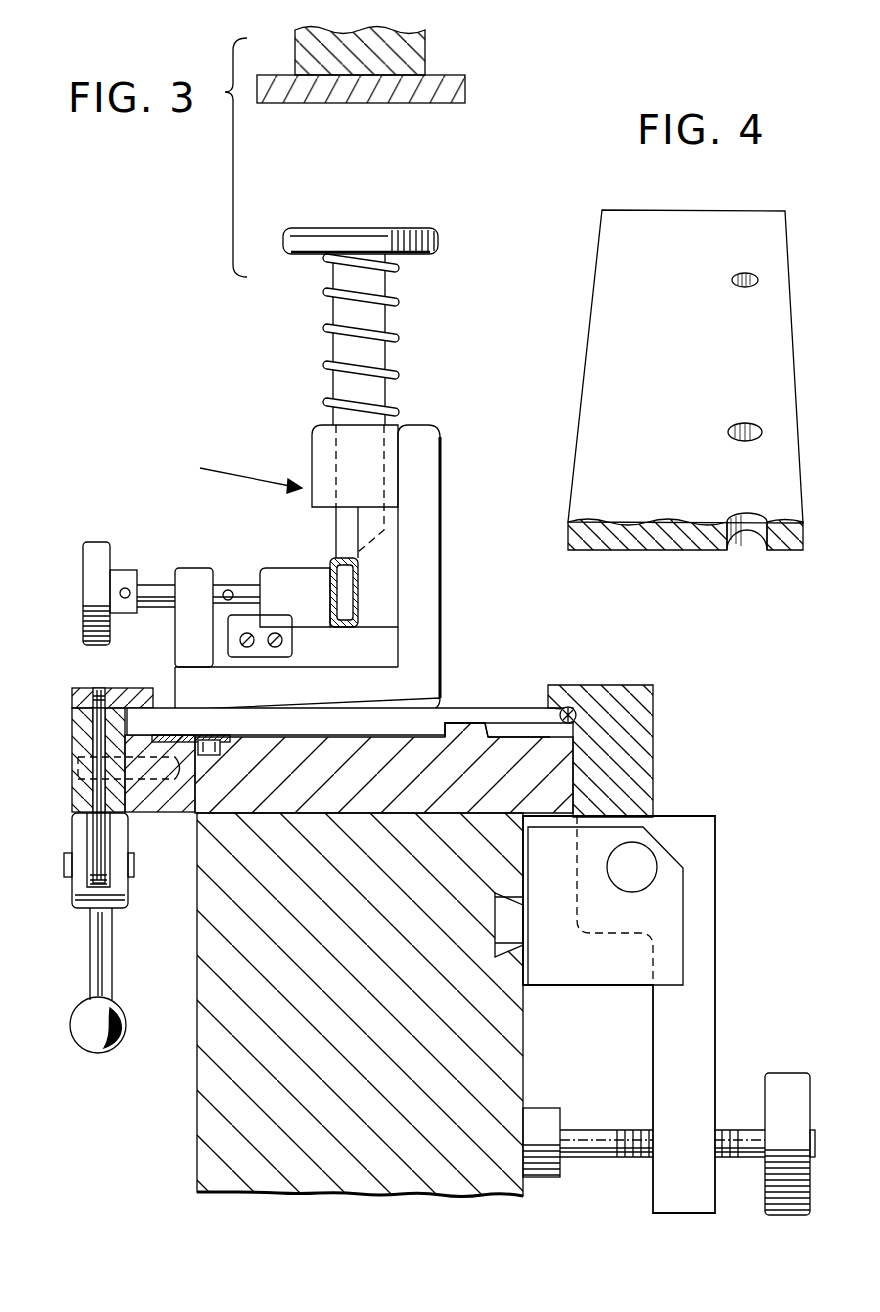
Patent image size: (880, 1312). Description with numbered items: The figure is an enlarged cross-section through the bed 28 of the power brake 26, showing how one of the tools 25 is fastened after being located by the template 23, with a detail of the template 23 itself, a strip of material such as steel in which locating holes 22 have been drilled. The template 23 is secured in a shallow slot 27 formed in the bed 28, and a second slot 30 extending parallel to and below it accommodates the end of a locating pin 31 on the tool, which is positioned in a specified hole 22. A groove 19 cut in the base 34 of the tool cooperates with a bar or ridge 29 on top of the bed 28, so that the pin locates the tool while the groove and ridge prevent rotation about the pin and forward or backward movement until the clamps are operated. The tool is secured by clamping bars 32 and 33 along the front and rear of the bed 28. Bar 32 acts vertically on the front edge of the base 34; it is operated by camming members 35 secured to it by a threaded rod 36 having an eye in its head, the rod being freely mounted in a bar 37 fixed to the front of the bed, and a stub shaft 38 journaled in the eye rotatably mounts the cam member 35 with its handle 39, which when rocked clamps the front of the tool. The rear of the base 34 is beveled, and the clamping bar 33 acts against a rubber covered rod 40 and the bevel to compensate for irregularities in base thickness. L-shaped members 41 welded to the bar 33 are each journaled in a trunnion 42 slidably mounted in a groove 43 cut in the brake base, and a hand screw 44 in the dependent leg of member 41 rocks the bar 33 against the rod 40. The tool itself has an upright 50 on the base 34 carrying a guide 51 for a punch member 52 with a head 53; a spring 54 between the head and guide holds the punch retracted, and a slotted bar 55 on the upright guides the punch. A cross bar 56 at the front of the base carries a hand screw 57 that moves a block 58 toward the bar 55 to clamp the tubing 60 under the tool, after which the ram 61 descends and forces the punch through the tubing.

In FIG. 3, the groove 19 is at (498, 735).
In FIG. 4, the locating holes 22 is at (743, 427).
In FIG. 3, the template 23 is at (163, 688).
In FIG. 4, the template 23 is at (598, 290).
In FIG. 3, the tools 25 is at (230, 476).
In FIG. 3, the power brake 26 is at (350, 1005).
In FIG. 3, the shallow slot 27 is at (178, 747).
In FIG. 3, the bed 28 is at (392, 715).
In FIG. 3, the bar or ridge 29 is at (455, 722).
In FIG. 3, the second slot 30 is at (208, 755).
In FIG. 3, the locating pin 31 is at (190, 755).
In FIG. 3, the clamping bar 32 is at (75, 688).
In FIG. 3, the clamping bar 33 is at (646, 724).
In FIG. 3, the base 34 is at (412, 712).
In FIG. 3, the camming member 35 is at (76, 866).
In FIG. 3, the threaded rod 36 is at (97, 797).
In FIG. 3, the bar 37 is at (80, 738).
In FIG. 3, the stub shaft 38 is at (64, 860).
In FIG. 3, the handle 39 is at (95, 975).
In FIG. 3, the rubber covered rod 40 is at (572, 710).
In FIG. 3, the L-shaped member 41 is at (661, 1014).
In FIG. 3, the trunnion 42 is at (680, 890).
In FIG. 3, the groove 43 is at (507, 942).
In FIG. 3, the hand screw 44 is at (580, 1135).
In FIG. 3, the upright 50 is at (346, 567).
In FIG. 3, the guide 51 is at (318, 447).
In FIG. 3, the punch member 52 is at (397, 339).
In FIG. 3, the head 53 is at (390, 230).
In FIG. 3, the spring 54 is at (392, 338).
In FIG. 3, the slotted bar 55 is at (388, 558).
In FIG. 3, the cross bar 56 is at (197, 575).
In FIG. 3, the hand screw 57 is at (158, 587).
In FIG. 3, the block 58 is at (272, 573).
In FIG. 3, the tubing 60 is at (332, 560).
In FIG. 3, the ram 61 is at (422, 53).